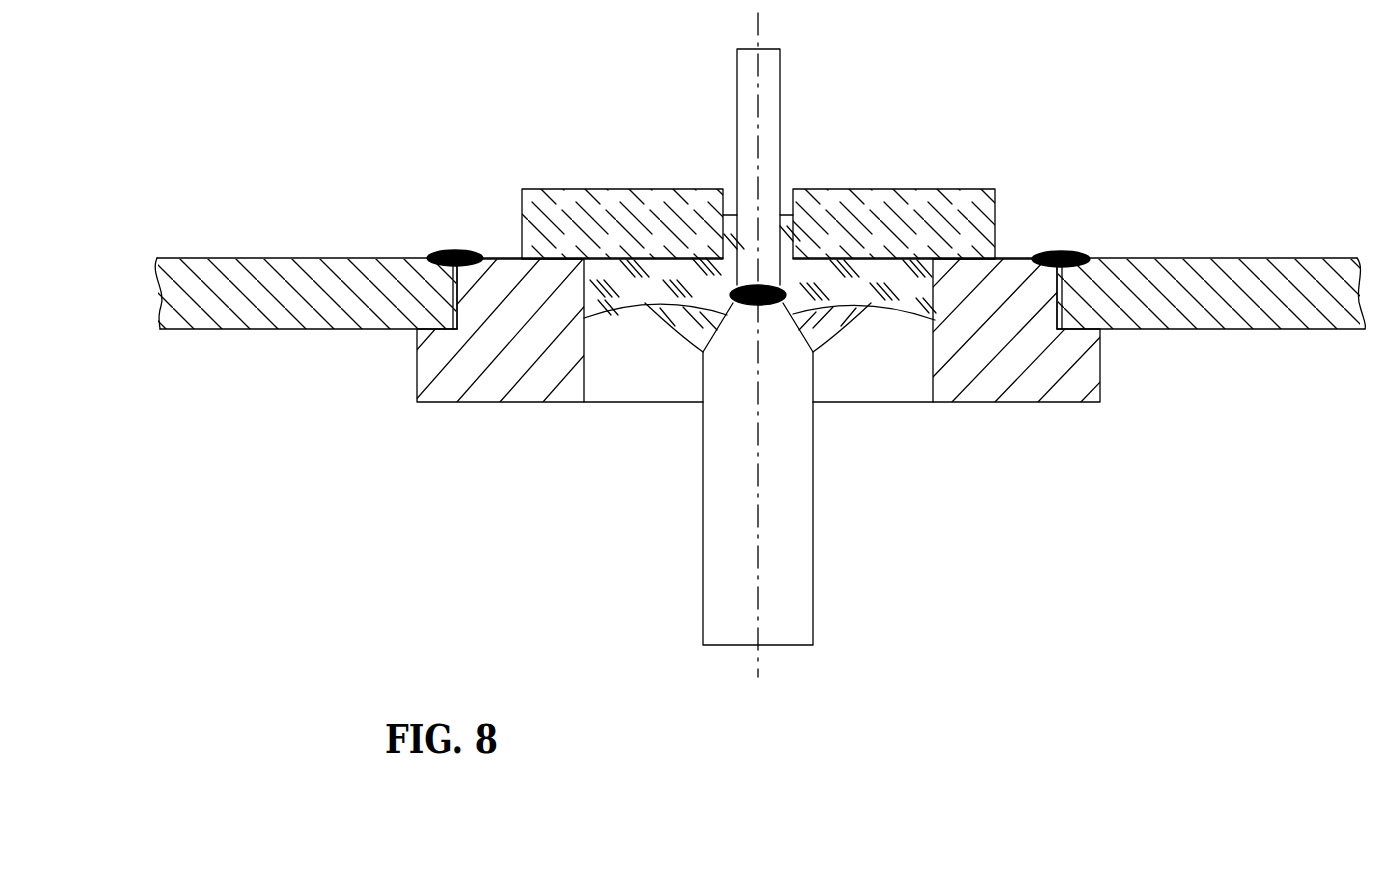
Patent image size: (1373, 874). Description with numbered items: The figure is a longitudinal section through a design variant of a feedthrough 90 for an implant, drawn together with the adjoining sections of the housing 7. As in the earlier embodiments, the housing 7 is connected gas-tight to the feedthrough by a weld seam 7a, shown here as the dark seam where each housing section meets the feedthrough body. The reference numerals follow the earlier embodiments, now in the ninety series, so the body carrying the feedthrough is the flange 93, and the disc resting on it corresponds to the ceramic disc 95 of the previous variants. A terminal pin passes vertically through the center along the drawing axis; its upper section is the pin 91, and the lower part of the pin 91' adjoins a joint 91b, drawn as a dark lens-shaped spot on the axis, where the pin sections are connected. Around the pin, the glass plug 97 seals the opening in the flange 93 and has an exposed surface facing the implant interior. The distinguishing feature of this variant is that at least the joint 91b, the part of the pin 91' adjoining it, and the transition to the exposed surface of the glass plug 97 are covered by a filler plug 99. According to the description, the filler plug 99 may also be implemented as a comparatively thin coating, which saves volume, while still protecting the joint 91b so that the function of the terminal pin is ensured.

The housing 7 is at (1218, 258).
The weld seam 7a is at (1063, 258).
The feedthrough 90 is at (1118, 90).
The shaft 91 is at (809, 167).
The pin 91' is at (814, 474).
The joint 91b is at (762, 305).
The holder block 93 is at (1082, 390).
The retaining ring 95 is at (935, 190).
The glass plug 97 is at (685, 283).
The filler plug 99 is at (687, 335).